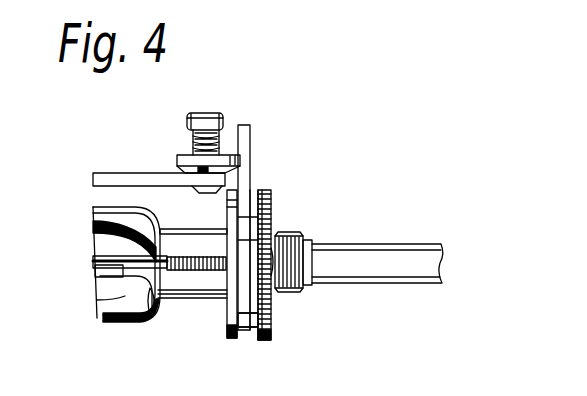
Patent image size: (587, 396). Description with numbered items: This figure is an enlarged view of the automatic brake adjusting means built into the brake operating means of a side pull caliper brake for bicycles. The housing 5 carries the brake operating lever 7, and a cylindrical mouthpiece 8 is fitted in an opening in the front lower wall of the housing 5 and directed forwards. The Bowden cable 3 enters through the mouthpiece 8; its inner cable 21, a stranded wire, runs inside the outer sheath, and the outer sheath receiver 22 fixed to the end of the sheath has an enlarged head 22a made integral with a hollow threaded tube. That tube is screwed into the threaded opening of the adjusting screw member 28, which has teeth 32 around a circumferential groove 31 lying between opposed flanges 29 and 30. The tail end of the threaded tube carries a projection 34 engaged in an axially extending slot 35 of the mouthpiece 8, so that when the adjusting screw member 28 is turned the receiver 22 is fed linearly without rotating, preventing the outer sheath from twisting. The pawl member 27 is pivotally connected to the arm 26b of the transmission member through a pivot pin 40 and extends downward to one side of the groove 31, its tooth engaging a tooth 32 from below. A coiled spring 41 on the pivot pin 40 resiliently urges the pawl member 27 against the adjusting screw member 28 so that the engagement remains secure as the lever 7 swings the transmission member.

The Bowden cable 3 is at (421, 284).
The housing 5 is at (97, 222).
The brake operating lever 7 is at (95, 282).
The cylindrical mouthpiece 8 is at (192, 233).
The inner cable 21 is at (102, 305).
The outer sheath receiver 22 is at (306, 292).
The enlarged head 22a is at (293, 232).
The arm of the transmission member 26b is at (133, 174).
The pawl member 27 is at (252, 142).
The adjusting screw member 28 is at (271, 193).
The flange 29 is at (273, 340).
The flange 30 is at (228, 326).
The circumferential groove 31 is at (250, 336).
The teeth 32 is at (254, 320).
The projection 34 is at (146, 320).
The axially extending slot 35 is at (187, 293).
The pivot pin 40 is at (212, 115).
The coiled spring 41 is at (190, 142).